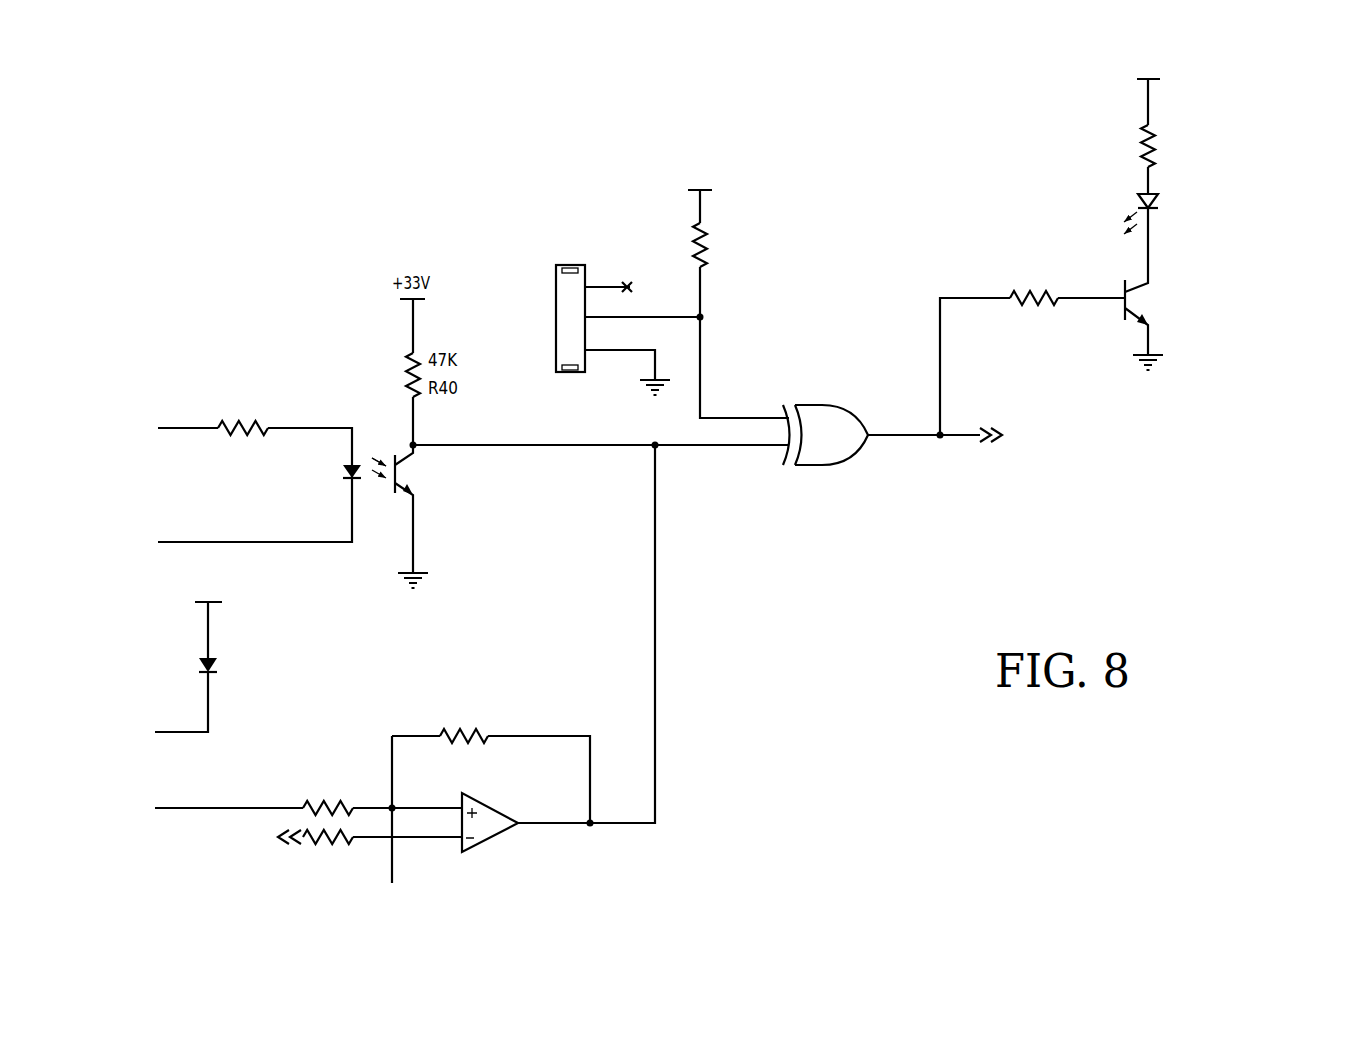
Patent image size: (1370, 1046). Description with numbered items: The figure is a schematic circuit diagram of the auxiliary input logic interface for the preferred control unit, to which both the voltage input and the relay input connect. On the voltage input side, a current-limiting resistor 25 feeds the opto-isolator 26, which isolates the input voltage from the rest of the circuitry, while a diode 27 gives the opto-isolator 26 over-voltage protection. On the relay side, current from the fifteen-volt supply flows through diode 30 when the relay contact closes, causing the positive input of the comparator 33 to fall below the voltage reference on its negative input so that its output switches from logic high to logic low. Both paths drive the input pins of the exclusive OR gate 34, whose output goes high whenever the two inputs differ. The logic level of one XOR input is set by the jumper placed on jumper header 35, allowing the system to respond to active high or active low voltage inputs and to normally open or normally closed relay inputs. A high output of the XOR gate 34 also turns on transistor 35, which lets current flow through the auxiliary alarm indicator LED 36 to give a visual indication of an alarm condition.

The resistor 25 is at (272, 416).
The opto-isolator 26 is at (392, 441).
The diode 27 is at (178, 490).
The diode 30 is at (290, 636).
The comparator 33 is at (500, 795).
The exclusive OR gate 34 is at (835, 398).
The jumper header 35 is at (595, 250).
The auxiliary alarm indicator LED 36 is at (1132, 190).